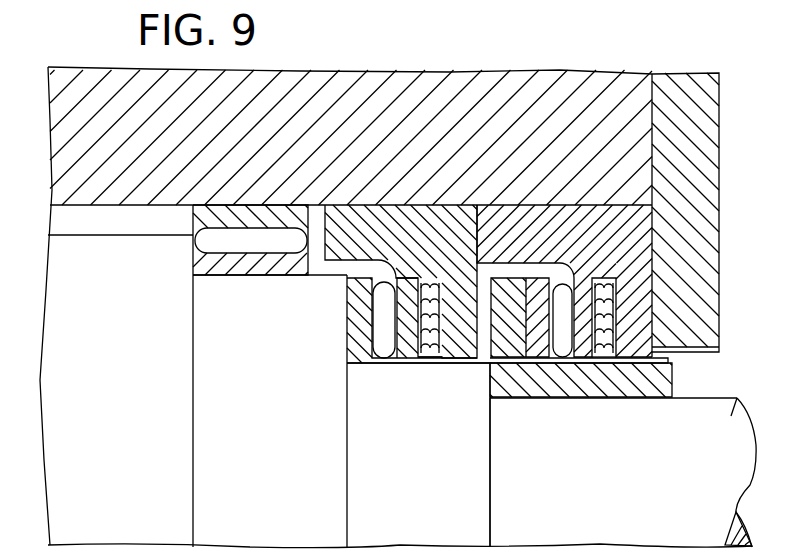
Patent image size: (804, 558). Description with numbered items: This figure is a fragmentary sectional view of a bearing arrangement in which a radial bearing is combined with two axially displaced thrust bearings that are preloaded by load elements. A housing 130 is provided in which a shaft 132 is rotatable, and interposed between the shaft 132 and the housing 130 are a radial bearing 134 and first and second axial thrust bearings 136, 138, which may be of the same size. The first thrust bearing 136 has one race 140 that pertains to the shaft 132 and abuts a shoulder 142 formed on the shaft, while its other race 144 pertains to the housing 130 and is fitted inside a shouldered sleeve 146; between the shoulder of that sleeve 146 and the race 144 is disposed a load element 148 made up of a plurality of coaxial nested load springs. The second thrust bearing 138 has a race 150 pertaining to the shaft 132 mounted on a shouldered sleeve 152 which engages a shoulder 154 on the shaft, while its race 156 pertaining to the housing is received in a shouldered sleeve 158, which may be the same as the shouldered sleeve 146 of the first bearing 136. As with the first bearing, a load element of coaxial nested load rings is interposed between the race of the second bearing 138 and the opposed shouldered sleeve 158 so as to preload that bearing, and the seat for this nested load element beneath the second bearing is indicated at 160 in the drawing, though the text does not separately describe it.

The housing 130 is at (601, 80).
The shaft 132 is at (737, 398).
The radial bearing 134 is at (245, 267).
The first axial thrust bearing 136 is at (386, 360).
The second axial thrust bearing 138 is at (559, 359).
The race 140 is at (358, 337).
The shoulder 142 is at (352, 463).
The race 144 is at (410, 357).
The shouldered sleeve 146 is at (468, 358).
The load element 148 is at (437, 358).
The race 150 is at (540, 364).
The shouldered sleeve 152 is at (513, 377).
The shoulder 154 is at (497, 522).
The race 156 is at (597, 359).
The shouldered sleeve 158 is at (653, 356).
The spring seat 160 is at (608, 360).